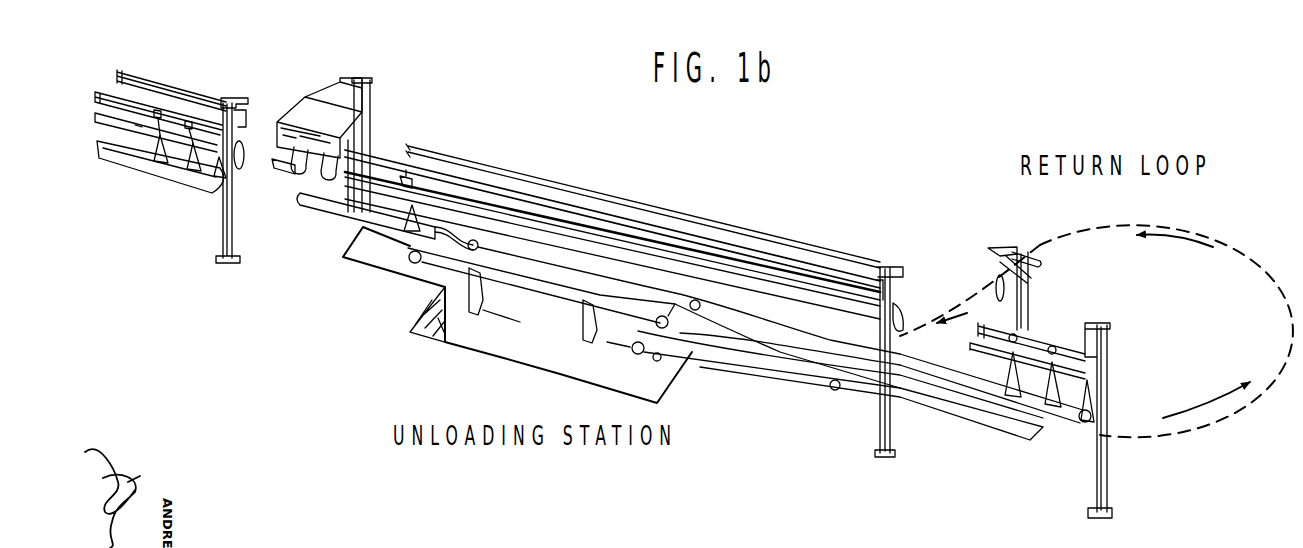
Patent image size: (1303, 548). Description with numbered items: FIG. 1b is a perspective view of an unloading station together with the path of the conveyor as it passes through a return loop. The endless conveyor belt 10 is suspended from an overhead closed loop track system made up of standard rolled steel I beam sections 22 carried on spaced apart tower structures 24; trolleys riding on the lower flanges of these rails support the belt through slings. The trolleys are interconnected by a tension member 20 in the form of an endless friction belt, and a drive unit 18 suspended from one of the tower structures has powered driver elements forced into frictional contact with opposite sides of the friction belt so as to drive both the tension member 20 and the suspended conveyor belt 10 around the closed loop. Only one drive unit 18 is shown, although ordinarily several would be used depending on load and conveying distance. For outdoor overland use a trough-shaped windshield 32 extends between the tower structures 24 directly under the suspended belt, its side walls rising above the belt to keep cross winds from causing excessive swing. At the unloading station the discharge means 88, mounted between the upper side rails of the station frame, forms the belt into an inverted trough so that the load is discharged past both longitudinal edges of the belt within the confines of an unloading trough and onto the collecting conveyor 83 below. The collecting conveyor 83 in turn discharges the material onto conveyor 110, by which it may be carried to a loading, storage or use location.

The endless conveyor belt 10 is at (345, 226).
The drive unit 18 is at (290, 184).
The tension member 20 is at (135, 125).
The I beam sections 22 is at (145, 105).
The tower structures 24 is at (222, 237).
The trough-shaped windshield 32 is at (197, 185).
The collecting conveyor 83 is at (430, 272).
The discharge means 88 is at (570, 272).
The conveyor 110 is at (862, 390).